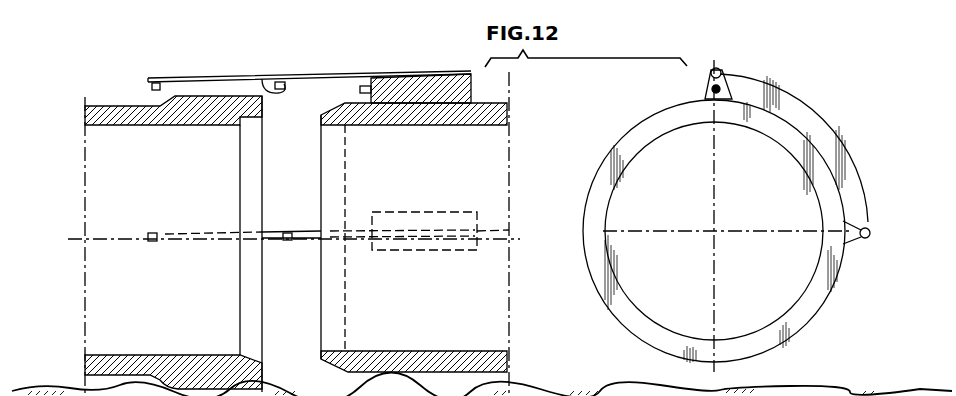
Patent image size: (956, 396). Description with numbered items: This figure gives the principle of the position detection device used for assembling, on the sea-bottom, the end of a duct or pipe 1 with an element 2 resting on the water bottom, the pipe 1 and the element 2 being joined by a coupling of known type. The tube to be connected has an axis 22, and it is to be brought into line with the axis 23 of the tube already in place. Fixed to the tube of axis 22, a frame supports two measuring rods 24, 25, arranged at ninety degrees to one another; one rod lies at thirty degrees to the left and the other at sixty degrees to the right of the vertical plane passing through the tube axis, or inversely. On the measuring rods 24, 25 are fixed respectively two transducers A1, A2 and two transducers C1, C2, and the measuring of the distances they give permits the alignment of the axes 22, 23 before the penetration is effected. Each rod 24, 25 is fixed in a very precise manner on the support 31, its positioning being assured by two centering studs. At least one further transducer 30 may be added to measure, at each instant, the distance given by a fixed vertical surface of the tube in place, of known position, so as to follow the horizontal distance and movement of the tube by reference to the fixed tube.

The pipe 1 is at (92, 365).
The element 2 is at (497, 355).
The tube axis 22 is at (495, 232).
The axis of tube in place 23 is at (97, 238).
The measuring rod 24 is at (303, 232).
The measuring rod 25 is at (322, 75).
The transducer 30 is at (364, 86).
The support 31 is at (447, 80).
The transducer A1 is at (155, 80).
The transducer A2 is at (270, 80).
The transducer C1 is at (157, 242).
The transducer C2 is at (285, 243).